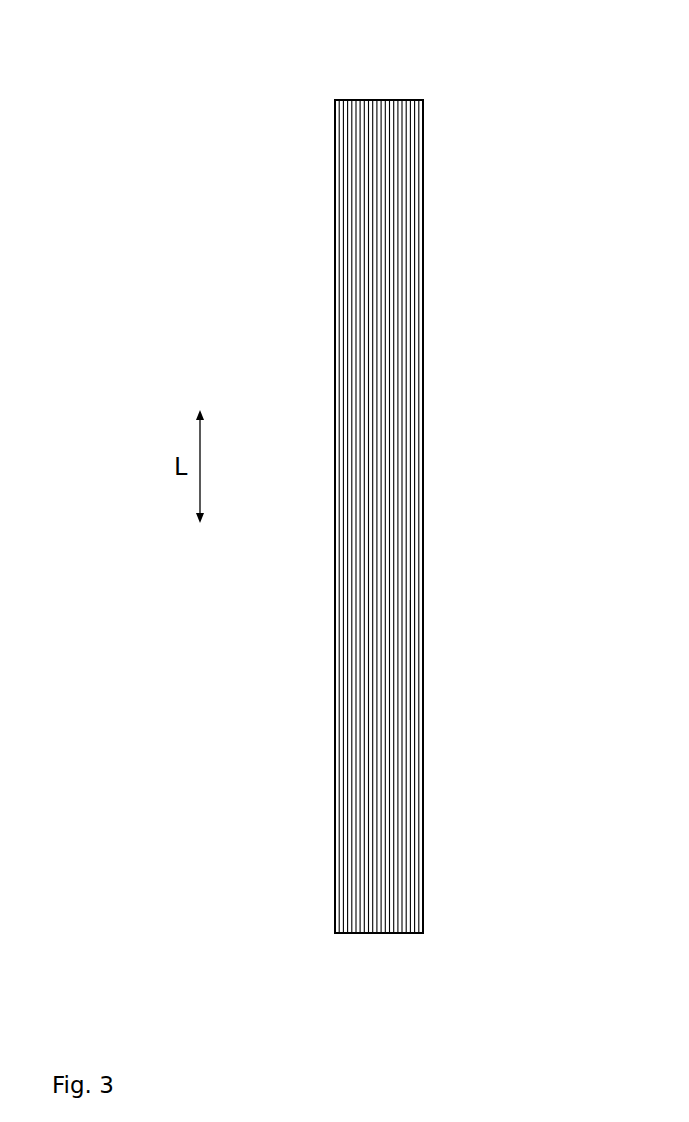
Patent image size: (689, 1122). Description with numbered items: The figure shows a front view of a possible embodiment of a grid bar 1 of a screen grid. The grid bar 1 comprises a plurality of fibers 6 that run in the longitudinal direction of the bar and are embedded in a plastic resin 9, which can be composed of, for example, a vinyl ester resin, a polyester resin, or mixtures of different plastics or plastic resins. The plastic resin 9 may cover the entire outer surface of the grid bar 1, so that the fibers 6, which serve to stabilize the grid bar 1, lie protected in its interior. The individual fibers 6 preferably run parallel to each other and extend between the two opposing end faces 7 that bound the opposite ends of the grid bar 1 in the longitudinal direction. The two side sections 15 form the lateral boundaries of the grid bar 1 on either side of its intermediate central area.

The grid bar 1 is at (272, 235).
The fibers 6 is at (412, 555).
The end faces 7 is at (380, 100).
The plastic resin 9 is at (412, 662).
The side sections 15 is at (423, 392).